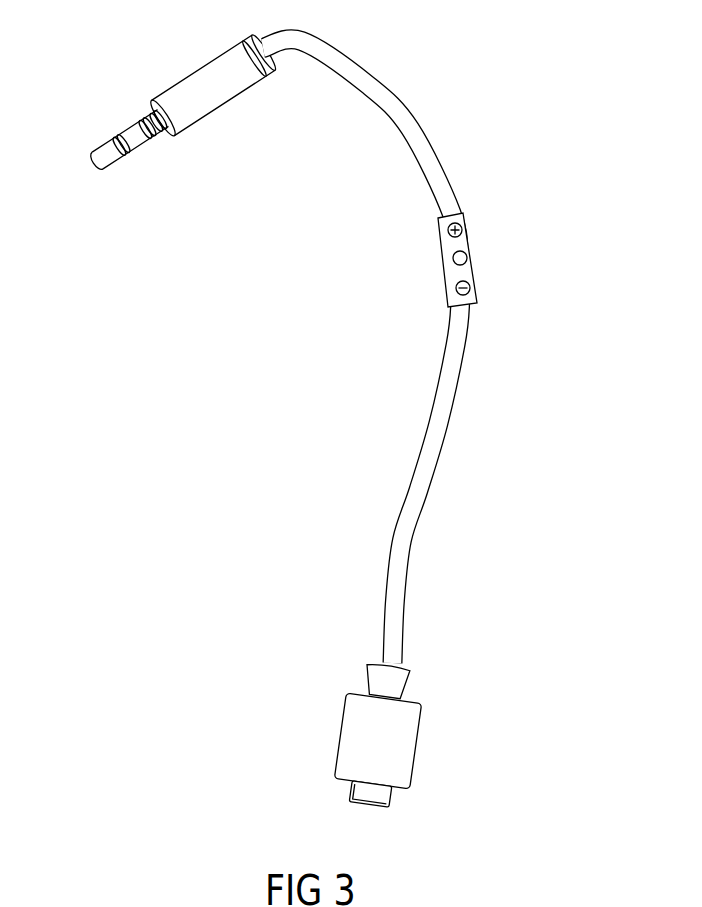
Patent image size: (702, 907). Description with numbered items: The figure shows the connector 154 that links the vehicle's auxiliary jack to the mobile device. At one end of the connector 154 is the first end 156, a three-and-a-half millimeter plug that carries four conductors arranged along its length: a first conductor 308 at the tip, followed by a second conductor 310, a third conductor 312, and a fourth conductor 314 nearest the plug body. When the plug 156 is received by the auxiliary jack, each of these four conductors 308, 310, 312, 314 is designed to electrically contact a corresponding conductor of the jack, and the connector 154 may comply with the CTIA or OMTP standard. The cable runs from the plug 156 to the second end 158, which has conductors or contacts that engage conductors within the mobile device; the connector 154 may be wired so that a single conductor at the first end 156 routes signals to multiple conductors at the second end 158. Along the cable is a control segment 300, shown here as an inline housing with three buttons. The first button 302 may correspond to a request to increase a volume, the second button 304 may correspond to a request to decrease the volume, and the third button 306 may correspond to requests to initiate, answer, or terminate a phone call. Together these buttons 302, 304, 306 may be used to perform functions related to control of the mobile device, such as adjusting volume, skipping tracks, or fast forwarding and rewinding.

The connector 154 is at (420, 127).
The first end 156 is at (211, 118).
The second end 158 is at (410, 737).
The control segment 300 is at (309, 421).
The first button 302 is at (446, 226).
The second button 304 is at (472, 288).
The third button 306 is at (452, 265).
The first conductor 308 is at (101, 148).
The second conductor 310 is at (128, 130).
The third conductor 312 is at (152, 137).
The fourth conductor 314 is at (161, 127).